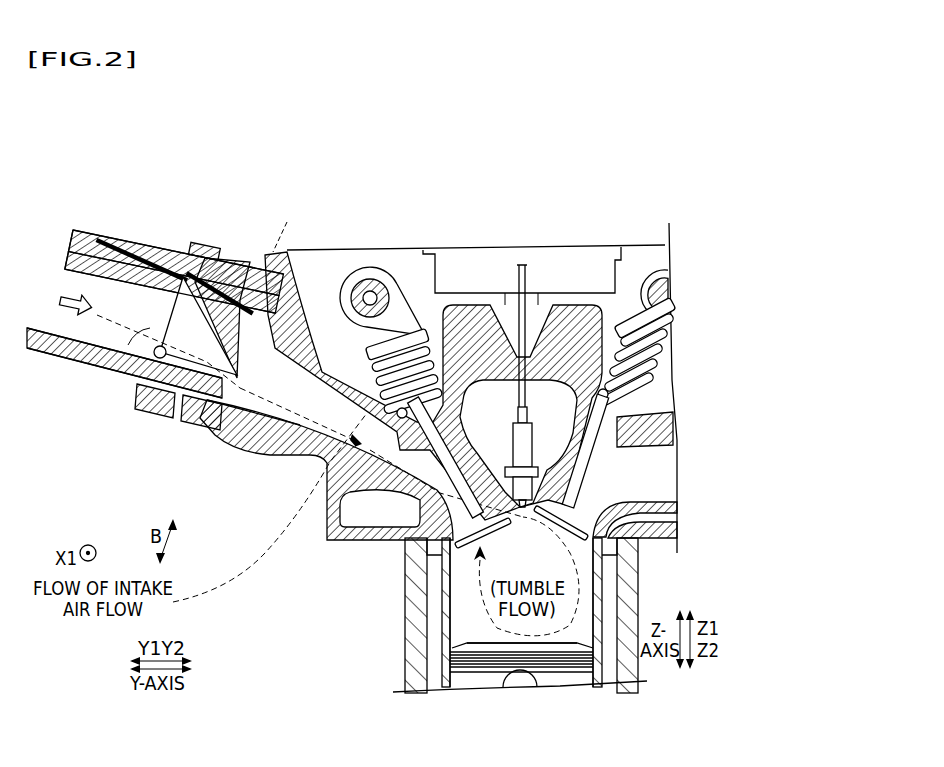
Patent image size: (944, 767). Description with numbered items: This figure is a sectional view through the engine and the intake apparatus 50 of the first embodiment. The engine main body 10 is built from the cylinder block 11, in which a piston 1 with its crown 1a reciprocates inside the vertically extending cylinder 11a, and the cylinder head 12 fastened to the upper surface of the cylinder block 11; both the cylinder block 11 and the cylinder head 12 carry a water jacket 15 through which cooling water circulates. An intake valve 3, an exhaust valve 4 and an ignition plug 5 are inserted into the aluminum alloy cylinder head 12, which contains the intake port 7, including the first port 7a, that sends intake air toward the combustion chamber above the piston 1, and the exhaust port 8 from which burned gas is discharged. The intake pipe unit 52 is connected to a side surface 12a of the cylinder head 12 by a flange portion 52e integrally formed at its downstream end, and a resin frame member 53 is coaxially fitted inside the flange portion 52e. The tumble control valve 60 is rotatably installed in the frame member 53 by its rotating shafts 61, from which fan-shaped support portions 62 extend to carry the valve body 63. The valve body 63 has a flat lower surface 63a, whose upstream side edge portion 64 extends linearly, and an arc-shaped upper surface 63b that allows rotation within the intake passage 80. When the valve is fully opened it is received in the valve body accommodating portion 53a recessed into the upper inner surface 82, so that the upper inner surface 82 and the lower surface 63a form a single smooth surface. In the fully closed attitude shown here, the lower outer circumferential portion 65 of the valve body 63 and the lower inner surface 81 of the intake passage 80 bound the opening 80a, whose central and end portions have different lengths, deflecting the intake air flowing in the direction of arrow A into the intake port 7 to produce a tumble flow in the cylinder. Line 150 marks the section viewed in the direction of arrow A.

The piston 1 is at (460, 682).
The piston crown 1a is at (473, 636).
The intake valve 3 is at (465, 495).
The exhaust valve 4 is at (600, 420).
The ignition plug 5 is at (536, 436).
The intake port 7 is at (300, 297).
The first port 7a is at (352, 402).
The exhaust port 8 is at (683, 440).
The engine main body 10 is at (450, 274).
The cylinder block 11 is at (425, 547).
The cylinder 11a is at (457, 595).
The cylinder head 12 is at (620, 257).
The side surface 12a is at (203, 437).
The water jacket 15 is at (430, 583).
The intake apparatus 50 is at (55, 236).
The intake pipe unit 52 is at (75, 258).
The flange portion 52e is at (228, 250).
The frame member 53 is at (110, 350).
The valve body accommodating portion 53a is at (130, 280).
The tumble control valve (TCV) 60 is at (80, 420).
The rotating shaft 61 is at (113, 365).
The support portion 62 is at (155, 362).
The valve body 63 is at (250, 410).
The lower surface 63a is at (168, 273).
The upper surface 63b is at (270, 420).
The upstream side edge portion 64 is at (180, 270).
The lower outer circumferential portion 65 is at (215, 415).
The intake passage 80 is at (50, 355).
The opening 80a is at (268, 507).
The lower inner surface 81 is at (150, 385).
The upper inner surface 82 is at (100, 262).
The line 150- 150 is at (286, 223).